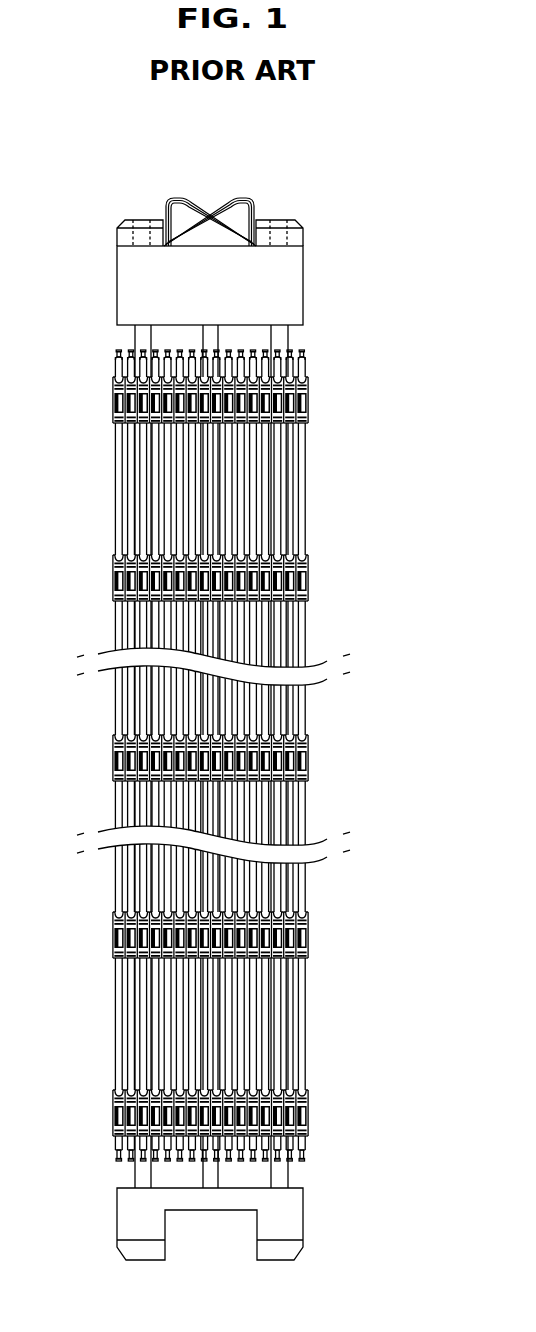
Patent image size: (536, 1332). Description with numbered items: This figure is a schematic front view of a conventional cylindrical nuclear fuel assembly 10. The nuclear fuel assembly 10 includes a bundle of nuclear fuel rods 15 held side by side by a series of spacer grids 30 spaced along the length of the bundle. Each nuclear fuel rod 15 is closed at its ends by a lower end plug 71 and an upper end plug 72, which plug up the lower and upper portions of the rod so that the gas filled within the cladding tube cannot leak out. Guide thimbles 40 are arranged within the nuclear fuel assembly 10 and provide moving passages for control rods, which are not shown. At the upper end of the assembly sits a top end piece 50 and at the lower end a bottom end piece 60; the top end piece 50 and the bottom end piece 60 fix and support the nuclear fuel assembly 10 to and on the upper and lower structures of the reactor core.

The nuclear fuel assembly 10 is at (331, 193).
The nuclear fuel rods 15 is at (304, 480).
The spacer grids 30 is at (307, 580).
The guide thimbles 40 is at (282, 334).
The top end piece 50 is at (280, 279).
The bottom end piece 60 is at (295, 1218).
The lower end plug 71 is at (303, 1158).
The upper end plug 72 is at (302, 352).